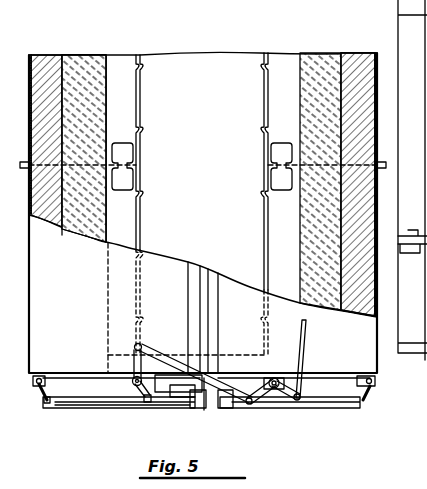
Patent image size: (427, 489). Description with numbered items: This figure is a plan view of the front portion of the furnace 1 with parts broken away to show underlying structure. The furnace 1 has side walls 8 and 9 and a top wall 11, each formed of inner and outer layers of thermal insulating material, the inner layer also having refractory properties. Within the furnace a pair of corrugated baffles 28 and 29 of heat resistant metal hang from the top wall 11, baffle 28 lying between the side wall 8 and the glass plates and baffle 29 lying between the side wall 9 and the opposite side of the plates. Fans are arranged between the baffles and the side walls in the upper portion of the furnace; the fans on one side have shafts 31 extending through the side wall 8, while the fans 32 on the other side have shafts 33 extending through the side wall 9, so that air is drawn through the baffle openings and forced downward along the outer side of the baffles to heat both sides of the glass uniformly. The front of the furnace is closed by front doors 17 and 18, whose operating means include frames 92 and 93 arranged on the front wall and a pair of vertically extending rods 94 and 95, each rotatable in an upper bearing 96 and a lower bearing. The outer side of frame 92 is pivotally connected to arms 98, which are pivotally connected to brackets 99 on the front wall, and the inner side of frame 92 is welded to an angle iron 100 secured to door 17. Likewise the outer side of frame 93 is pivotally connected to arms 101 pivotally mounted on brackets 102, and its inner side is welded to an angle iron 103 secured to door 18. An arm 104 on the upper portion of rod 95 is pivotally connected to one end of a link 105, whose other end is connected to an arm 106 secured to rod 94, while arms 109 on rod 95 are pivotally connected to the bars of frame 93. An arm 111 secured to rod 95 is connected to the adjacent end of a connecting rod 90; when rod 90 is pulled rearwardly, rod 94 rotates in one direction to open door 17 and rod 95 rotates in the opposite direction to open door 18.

The furnace 1 is at (43, 52).
The side wall 8 is at (55, 148).
The side wall 9 is at (337, 171).
The top wall 11 is at (74, 296).
The front door 17 is at (203, 410).
The front door 18 is at (224, 410).
The corrugated baffle 28 is at (142, 101).
The corrugated baffle 29 is at (263, 104).
The shaft 31 is at (84, 148).
The fan 32 is at (117, 143).
The shaft 33 is at (322, 140).
The connecting rod 90 is at (306, 332).
The frame 92 is at (399, 15).
The frame 93 is at (334, 410).
The vertically extending rod 94 is at (134, 388).
The vertically extending rod 95 is at (279, 381).
The upper bearing 96 is at (132, 380).
The arm 98 is at (402, 232).
The bracket 99 is at (412, 255).
The angle iron 100 is at (184, 400).
The arm 101 is at (368, 394).
The bracket 102 is at (378, 390).
The angle iron 103 is at (246, 404).
The arm 104 is at (257, 386).
The link 105 is at (146, 348).
The arm 106 is at (133, 346).
The arm 109 is at (268, 392).
The arm 111 is at (288, 404).